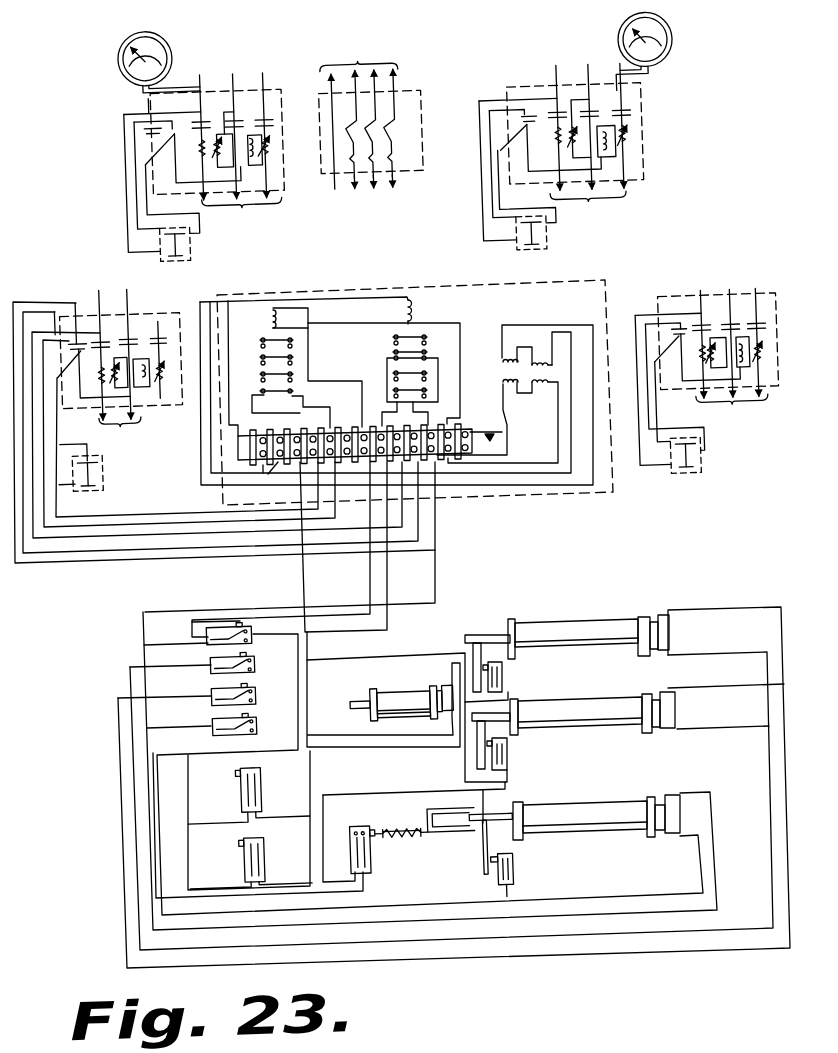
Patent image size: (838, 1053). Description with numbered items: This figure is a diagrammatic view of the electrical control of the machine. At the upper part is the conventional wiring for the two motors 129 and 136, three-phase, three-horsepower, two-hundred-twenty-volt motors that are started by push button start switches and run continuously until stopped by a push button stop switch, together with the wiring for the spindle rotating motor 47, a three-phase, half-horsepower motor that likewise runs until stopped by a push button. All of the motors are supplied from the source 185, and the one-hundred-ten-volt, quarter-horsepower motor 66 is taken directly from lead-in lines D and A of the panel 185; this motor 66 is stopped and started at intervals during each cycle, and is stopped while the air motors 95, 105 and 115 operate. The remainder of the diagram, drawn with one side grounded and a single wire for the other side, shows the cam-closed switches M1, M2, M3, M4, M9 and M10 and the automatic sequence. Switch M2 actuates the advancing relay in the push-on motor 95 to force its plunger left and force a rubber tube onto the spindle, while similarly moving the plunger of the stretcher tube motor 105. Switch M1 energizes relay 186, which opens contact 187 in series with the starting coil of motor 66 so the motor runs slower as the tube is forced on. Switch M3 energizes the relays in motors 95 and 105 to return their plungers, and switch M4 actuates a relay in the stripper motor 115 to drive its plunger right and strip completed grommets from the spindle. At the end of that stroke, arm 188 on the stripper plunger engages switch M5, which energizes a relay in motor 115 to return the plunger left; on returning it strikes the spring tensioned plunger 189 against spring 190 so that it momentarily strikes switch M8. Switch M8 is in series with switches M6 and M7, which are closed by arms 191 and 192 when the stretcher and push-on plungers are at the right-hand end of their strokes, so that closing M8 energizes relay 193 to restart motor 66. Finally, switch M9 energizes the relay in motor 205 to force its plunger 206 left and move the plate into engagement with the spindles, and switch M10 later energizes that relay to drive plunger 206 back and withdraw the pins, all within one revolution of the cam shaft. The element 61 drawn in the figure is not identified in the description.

The motor 136 is at (120, 88).
The motor 129 is at (677, 75).
The source 185 is at (426, 174).
The spindle rotating motor 47 is at (722, 266).
The motor 66 is at (145, 440).
The coil 61 is at (146, 382).
The relay 186 is at (345, 367).
The relay 193 is at (400, 363).
The contact 187 is at (291, 411).
The arm 191 is at (479, 657).
The arm 192 is at (476, 752).
The air motor 105 is at (593, 617).
The air motor 95 is at (575, 733).
The stripper motor 115 is at (605, 838).
The motor 205 is at (397, 697).
The plunger 206 is at (354, 700).
The spring 190 is at (393, 829).
The spring tensioned plunger 189 is at (405, 838).
The arm 188 is at (480, 849).
The switch M1 is at (243, 632).
The switch M2 is at (245, 662).
The switch M3 is at (246, 693).
The switch M4 is at (247, 723).
The switch M5 is at (517, 874).
The switch M6 is at (507, 677).
The switch M7 is at (509, 754).
The switch M8 is at (351, 850).
The switch M9 is at (248, 795).
The switch M10 is at (251, 862).